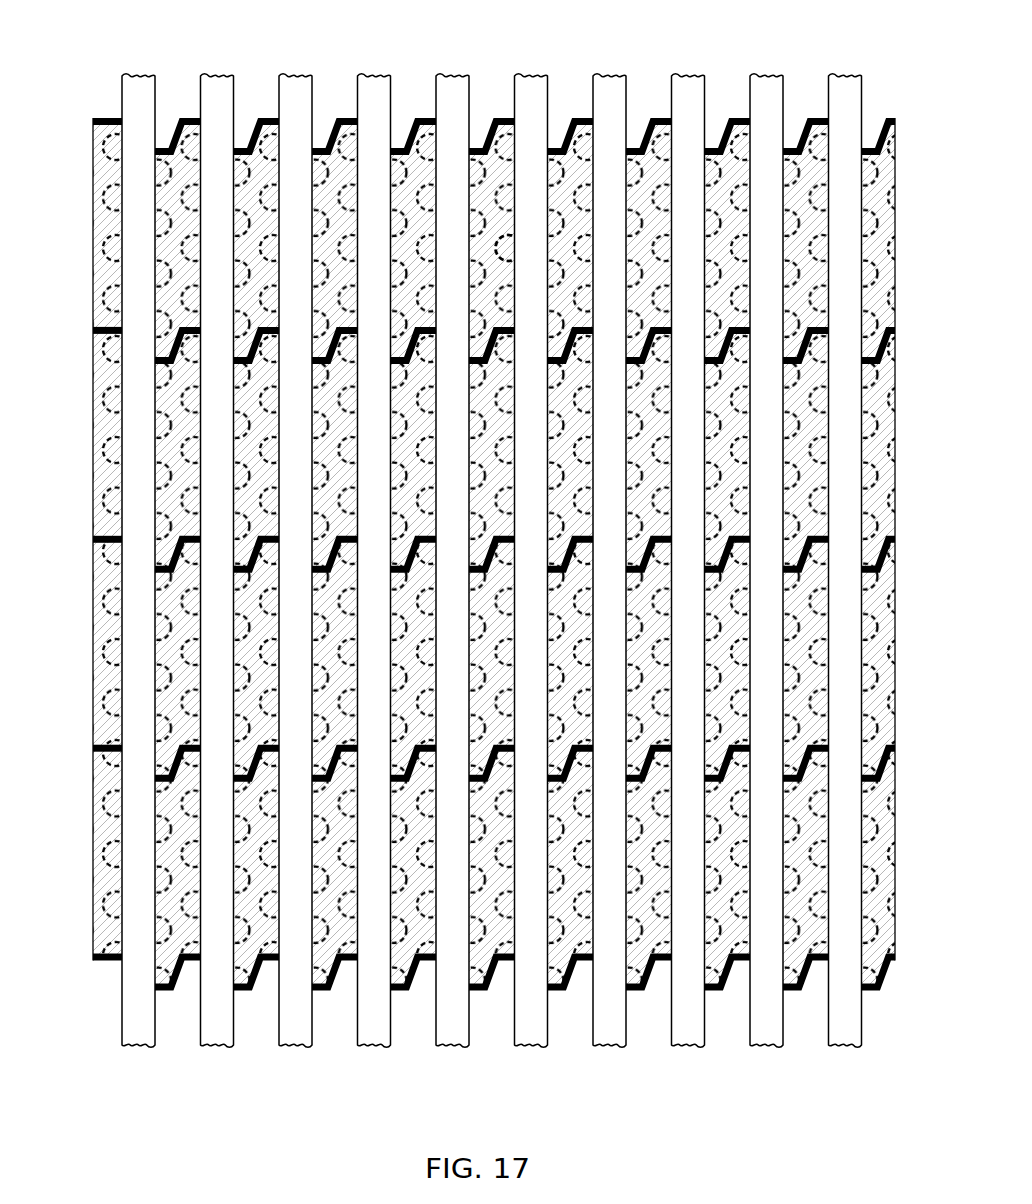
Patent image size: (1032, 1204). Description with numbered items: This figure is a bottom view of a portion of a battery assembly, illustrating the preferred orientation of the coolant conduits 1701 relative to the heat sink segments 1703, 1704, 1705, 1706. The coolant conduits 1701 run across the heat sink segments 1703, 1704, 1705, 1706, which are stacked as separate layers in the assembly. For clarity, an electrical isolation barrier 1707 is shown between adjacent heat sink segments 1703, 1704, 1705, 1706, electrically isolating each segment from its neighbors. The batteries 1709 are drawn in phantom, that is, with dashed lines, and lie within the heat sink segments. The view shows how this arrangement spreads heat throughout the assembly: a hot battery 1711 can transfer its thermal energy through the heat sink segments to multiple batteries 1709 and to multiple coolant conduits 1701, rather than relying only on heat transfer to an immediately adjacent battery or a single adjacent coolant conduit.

The coolant conduits 1701 is at (217, 1046).
The heat sink segment 1703 is at (103, 855).
The heat sink segment 1704 is at (103, 648).
The heat sink segment 1705 is at (103, 435).
The heat sink segment 1706 is at (100, 227).
The electrical isolation barrier 1707 is at (92, 332).
The batteries 1709 is at (628, 181).
The hot battery 1711 is at (510, 252).